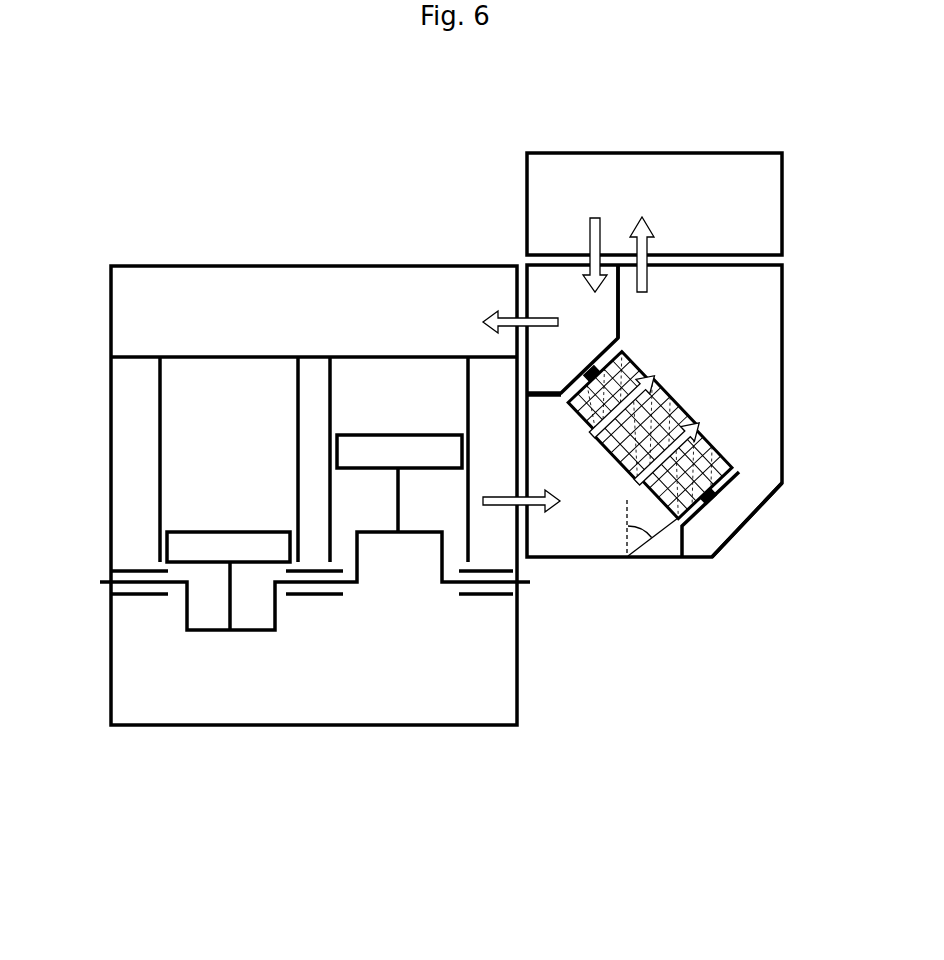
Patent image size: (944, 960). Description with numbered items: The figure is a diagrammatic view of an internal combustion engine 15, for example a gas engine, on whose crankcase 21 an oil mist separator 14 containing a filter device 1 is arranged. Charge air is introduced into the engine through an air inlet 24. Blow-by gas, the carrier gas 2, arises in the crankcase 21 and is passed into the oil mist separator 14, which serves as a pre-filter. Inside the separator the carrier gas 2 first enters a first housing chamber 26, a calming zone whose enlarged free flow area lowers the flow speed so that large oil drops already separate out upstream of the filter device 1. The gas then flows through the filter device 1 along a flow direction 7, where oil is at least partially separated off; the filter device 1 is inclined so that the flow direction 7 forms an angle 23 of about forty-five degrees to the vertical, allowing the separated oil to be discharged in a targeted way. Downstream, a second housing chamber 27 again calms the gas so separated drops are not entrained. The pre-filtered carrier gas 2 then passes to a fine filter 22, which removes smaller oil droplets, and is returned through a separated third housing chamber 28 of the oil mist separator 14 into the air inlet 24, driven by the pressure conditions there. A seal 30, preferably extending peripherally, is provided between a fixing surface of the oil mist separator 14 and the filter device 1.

The filter device 1 is at (680, 398).
The carrier gas 2 is at (640, 218).
The flow direction 7 is at (759, 507).
The oil mist separator 14 is at (783, 407).
The internal combustion engine 15 is at (112, 247).
The crankcase 21 is at (185, 725).
The fine filter 22 is at (783, 205).
The angle 23 is at (636, 540).
The air inlet 24 is at (327, 318).
The first housing chamber 26 is at (571, 462).
The second housing chamber 27 is at (722, 338).
The third housing chamber 28 is at (602, 338).
The seal 30 is at (714, 497).